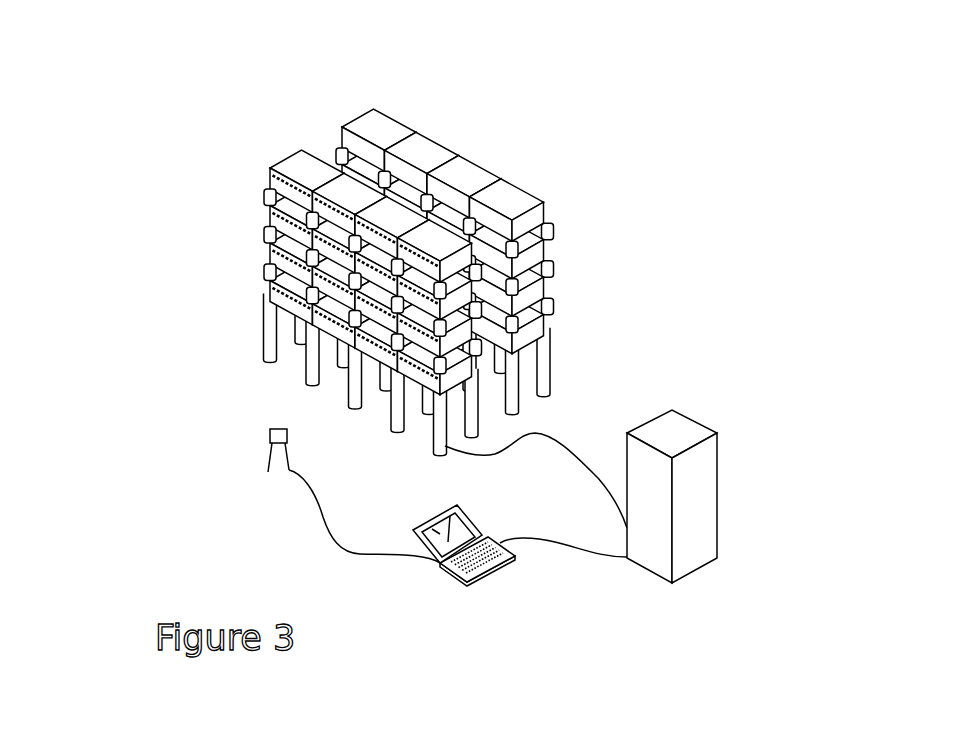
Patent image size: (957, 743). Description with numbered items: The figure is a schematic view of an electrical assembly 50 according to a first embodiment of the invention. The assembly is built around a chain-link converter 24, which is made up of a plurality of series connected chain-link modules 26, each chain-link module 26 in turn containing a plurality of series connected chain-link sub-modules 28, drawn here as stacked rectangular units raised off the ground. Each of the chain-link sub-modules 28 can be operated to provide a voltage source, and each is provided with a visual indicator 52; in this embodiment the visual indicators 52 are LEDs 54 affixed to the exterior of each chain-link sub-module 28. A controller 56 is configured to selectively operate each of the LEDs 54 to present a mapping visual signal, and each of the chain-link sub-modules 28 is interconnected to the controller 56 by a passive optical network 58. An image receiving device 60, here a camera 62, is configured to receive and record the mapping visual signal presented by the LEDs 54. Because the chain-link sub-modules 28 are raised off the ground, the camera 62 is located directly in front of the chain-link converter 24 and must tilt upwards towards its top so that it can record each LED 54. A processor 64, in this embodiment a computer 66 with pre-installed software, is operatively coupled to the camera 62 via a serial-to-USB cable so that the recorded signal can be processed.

The electrical assembly 50 is at (150, 158).
The chain-link converter 24 is at (588, 230).
The chain-link module 26 is at (347, 126).
The chain-link sub-module 28 is at (428, 148).
The visual indicator 52 is at (268, 234).
The LED 54 is at (268, 234).
The controller 56 is at (717, 497).
The passive optical network 58 is at (558, 447).
The image receiving device 60 is at (238, 455).
The camera 62 is at (267, 472).
The processor 64 is at (500, 595).
The computer 66 is at (458, 575).